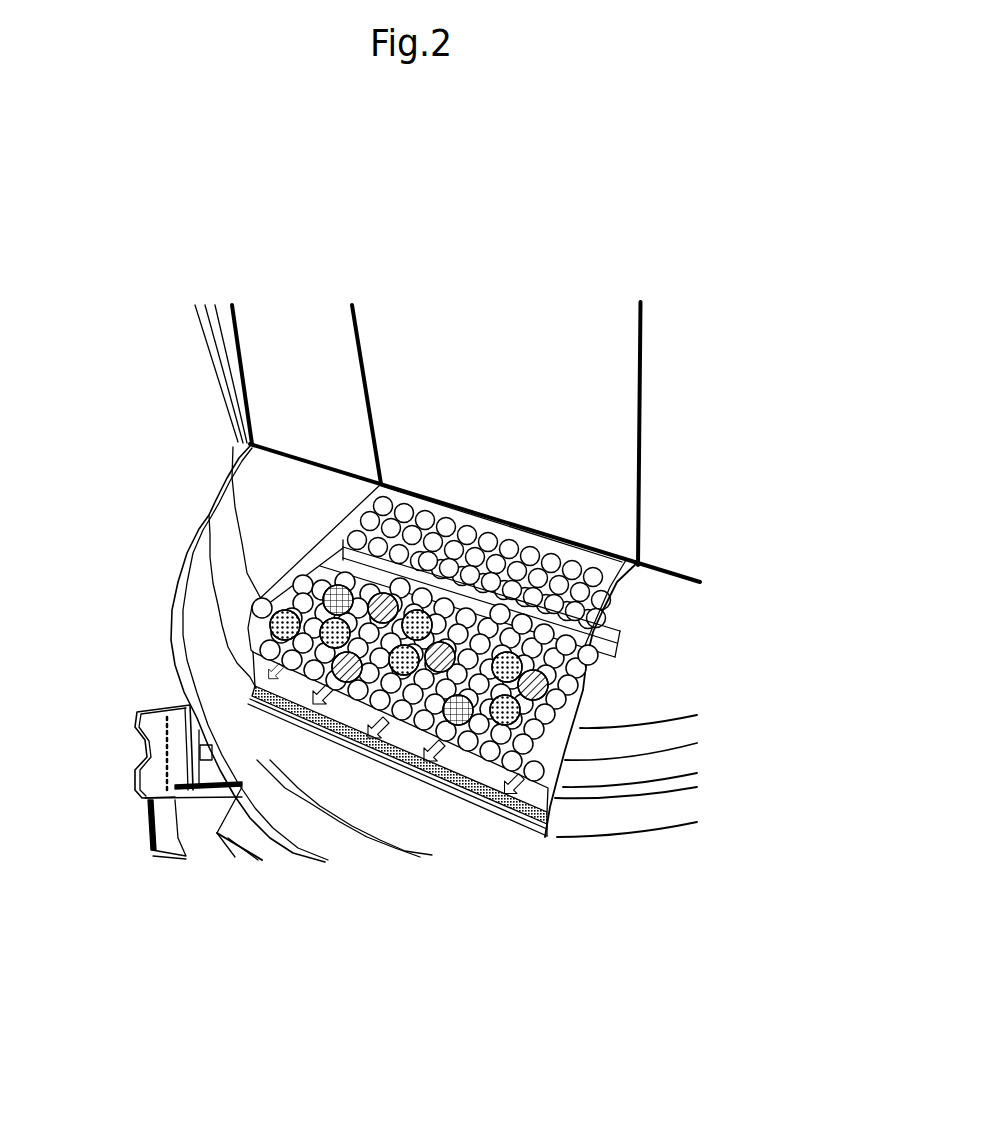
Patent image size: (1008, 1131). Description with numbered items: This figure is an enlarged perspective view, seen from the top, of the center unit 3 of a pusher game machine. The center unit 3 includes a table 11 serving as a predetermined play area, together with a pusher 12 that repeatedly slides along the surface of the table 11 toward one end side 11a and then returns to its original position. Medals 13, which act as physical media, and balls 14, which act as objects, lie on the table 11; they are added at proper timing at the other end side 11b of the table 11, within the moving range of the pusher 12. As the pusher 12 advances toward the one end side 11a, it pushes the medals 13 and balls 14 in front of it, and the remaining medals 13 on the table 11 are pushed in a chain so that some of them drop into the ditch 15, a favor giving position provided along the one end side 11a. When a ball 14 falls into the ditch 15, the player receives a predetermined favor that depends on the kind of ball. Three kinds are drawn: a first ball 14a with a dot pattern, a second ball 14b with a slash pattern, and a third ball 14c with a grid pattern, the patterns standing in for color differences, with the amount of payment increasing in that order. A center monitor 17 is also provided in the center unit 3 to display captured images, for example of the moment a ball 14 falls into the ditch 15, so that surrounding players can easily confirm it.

The center unit 3 is at (147, 342).
The table 11 is at (587, 668).
The one end side of the table 11a is at (262, 710).
The other end side of the table 11b is at (503, 513).
The pusher 12 is at (610, 623).
The medals 13 is at (577, 683).
The balls 14 is at (545, 654).
The first ball 14a is at (597, 707).
The second ball 14b is at (623, 570).
The third ball 14c is at (442, 742).
The ditch 15 is at (507, 812).
The center monitor 17 is at (425, 394).